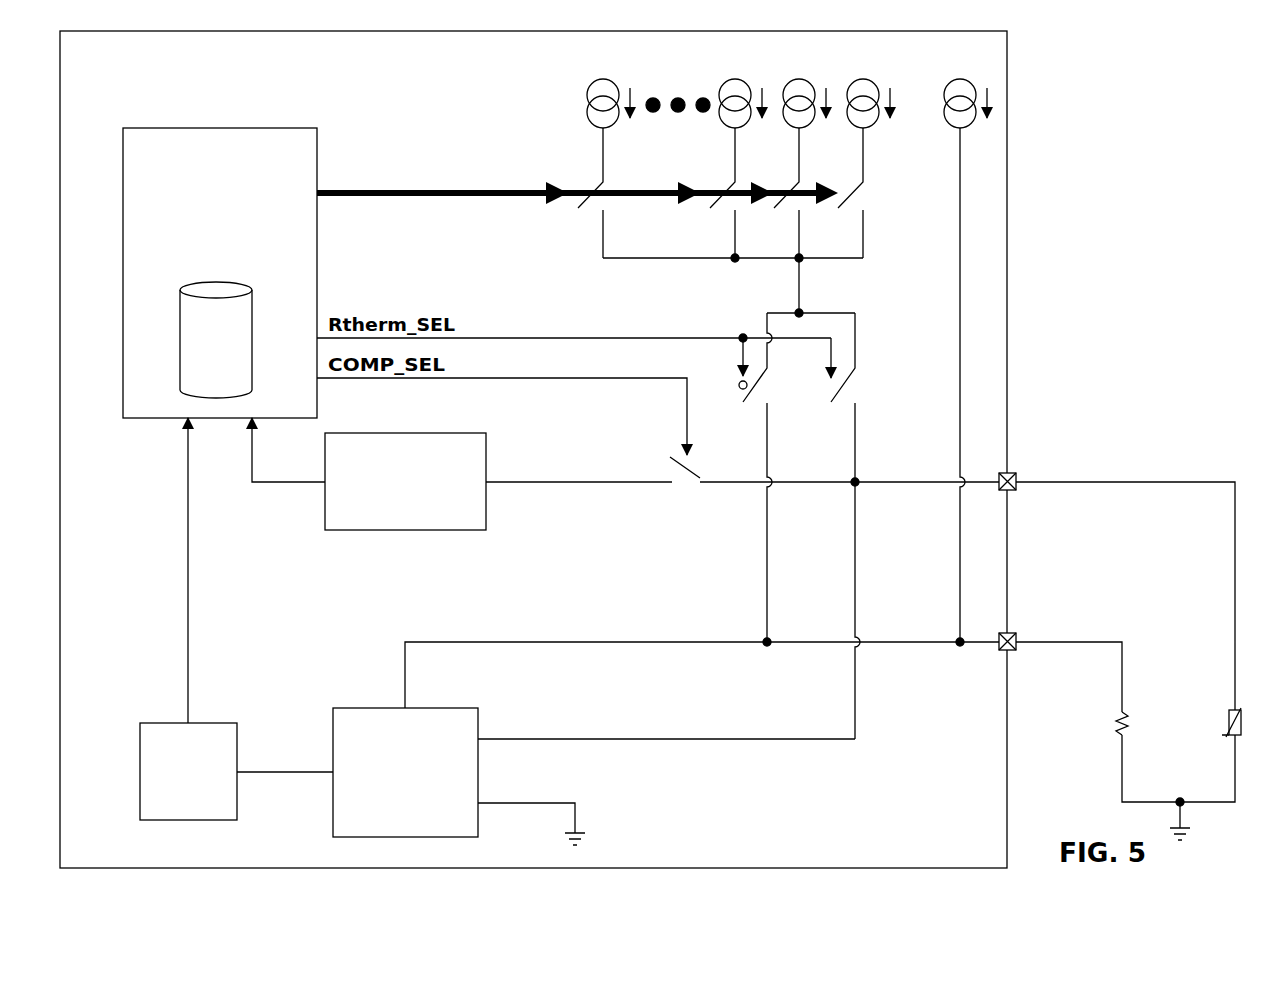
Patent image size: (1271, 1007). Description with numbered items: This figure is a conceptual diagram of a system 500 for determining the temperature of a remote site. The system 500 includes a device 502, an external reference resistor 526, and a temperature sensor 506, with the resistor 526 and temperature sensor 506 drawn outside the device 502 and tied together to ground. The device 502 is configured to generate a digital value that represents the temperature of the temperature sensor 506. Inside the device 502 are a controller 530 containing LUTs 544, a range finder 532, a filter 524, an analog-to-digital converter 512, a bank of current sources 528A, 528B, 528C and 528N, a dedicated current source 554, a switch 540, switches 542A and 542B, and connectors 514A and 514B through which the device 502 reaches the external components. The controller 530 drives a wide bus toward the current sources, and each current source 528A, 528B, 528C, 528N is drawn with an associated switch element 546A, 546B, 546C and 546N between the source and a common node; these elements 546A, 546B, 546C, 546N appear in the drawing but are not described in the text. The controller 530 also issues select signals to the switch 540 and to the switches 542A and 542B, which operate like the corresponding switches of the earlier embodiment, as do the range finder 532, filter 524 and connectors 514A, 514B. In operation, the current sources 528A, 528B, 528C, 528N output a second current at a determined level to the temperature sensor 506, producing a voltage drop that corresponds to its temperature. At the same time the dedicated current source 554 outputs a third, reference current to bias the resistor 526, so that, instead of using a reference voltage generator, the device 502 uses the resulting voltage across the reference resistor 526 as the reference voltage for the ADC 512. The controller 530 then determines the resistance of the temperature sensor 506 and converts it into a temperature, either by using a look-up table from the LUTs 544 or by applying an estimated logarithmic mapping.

The system 500 is at (1106, 110).
The device 502 is at (192, 61).
The controller 530 is at (237, 258).
The LUTs 544 is at (234, 368).
The range finder 532 is at (423, 515).
The filter 524 is at (206, 795).
The analog-to-digital converter 512 is at (423, 795).
The current source 528N is at (592, 80).
The current source 528C is at (724, 80).
The current source 528B is at (787, 80).
The current source 528A is at (852, 80).
The current source 554 is at (950, 80).
The switch 546N is at (590, 188).
The switch 546C is at (724, 188).
The switch 546B is at (788, 188).
The switch 546A is at (852, 188).
The switch 542A is at (760, 385).
The switch 542B is at (848, 385).
The switch 540 is at (690, 485).
The connector 514A is at (1013, 472).
The connector 514B is at (1013, 632).
The resistor 526 is at (1116, 718).
The temperature sensor 506 is at (1226, 718).